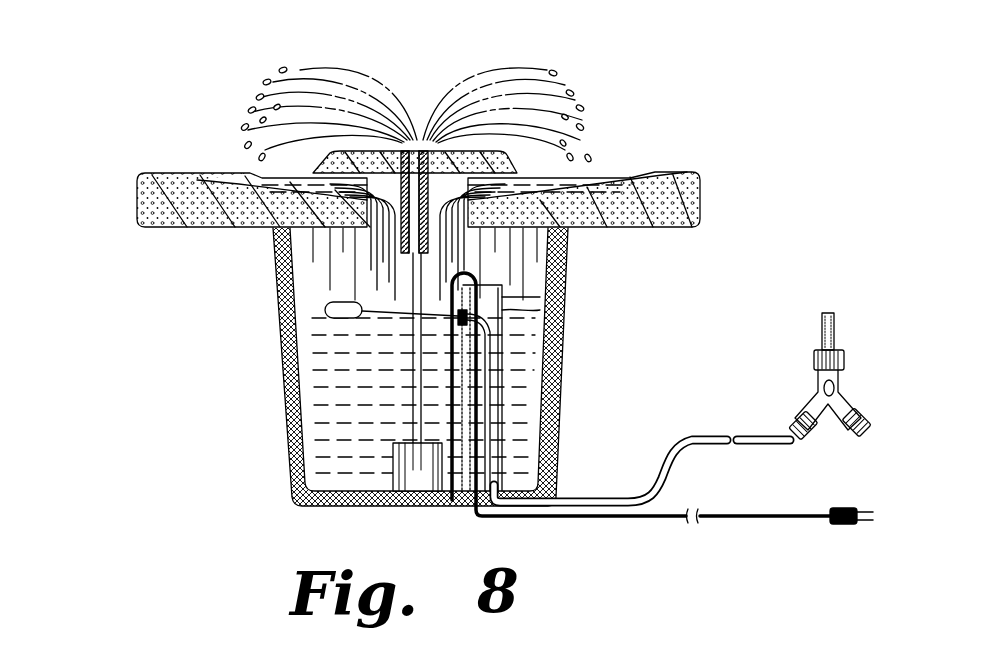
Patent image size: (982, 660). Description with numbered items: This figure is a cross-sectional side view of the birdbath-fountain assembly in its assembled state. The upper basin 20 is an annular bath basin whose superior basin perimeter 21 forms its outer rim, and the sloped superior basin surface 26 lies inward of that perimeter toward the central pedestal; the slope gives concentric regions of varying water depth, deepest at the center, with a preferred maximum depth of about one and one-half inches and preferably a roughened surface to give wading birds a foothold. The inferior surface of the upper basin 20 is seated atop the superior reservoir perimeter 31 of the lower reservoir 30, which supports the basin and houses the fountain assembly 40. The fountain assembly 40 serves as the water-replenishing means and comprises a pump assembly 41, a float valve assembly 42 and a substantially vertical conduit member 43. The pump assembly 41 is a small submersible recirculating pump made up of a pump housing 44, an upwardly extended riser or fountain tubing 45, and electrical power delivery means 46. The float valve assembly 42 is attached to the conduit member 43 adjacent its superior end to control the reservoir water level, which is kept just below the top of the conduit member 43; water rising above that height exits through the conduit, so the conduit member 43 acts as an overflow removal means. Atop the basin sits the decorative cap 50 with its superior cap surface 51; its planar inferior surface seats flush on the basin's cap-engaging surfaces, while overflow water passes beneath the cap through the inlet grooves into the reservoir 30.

The upper basin 20 is at (137, 202).
The superior basin perimeter 21 is at (163, 173).
The superior basin surface 26 is at (597, 190).
The lower reservoir 30 is at (283, 352).
The superior reservoir perimeter 31 is at (355, 391).
The fountain assembly 40 is at (352, 411).
The pump assembly 41 is at (406, 474).
The float valve assembly 42 is at (503, 338).
The conduit member 43 is at (518, 298).
The pump housing 44 is at (423, 466).
The fountain tubing 45 is at (413, 382).
The electrical power delivery means 46 is at (553, 520).
The decorative cap 50 is at (363, 172).
The superior cap surface 51 is at (478, 150).